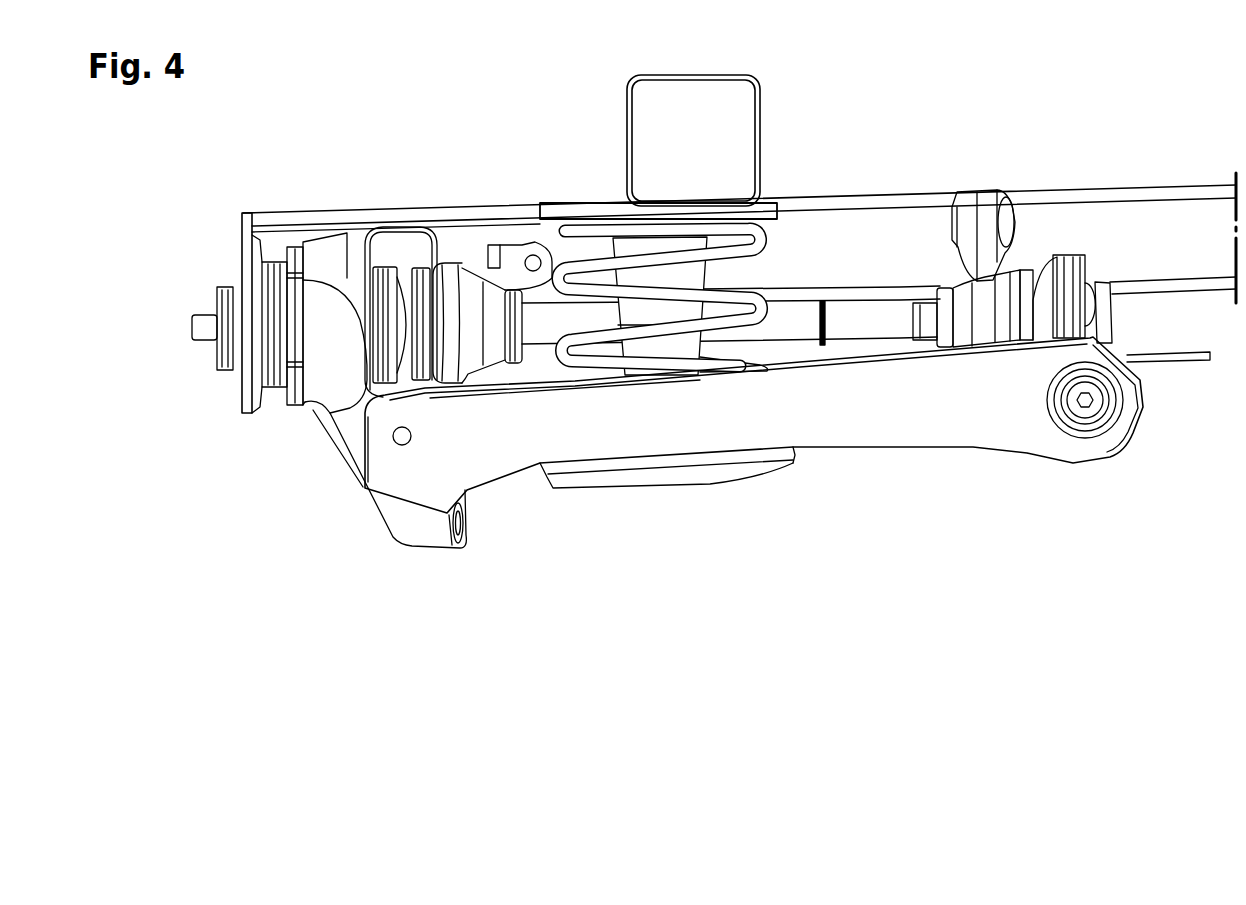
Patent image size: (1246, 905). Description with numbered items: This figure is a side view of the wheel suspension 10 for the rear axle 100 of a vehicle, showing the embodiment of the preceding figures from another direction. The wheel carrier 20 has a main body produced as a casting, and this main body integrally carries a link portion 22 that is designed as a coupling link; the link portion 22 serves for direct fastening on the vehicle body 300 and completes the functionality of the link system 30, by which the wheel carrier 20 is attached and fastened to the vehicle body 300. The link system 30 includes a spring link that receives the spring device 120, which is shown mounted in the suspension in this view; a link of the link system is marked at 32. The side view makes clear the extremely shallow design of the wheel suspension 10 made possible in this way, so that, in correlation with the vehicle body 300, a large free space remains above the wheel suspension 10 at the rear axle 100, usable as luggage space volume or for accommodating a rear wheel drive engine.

The rear axle 100 is at (310, 612).
The wheel suspension 10 is at (528, 600).
The wheel carrier 20 is at (342, 415).
The link portion 22 is at (795, 300).
The link system 30 is at (1147, 450).
The reinforcement bracket 32 is at (787, 413).
The spring device 120 is at (597, 273).
The vehicle body 300 is at (747, 90).